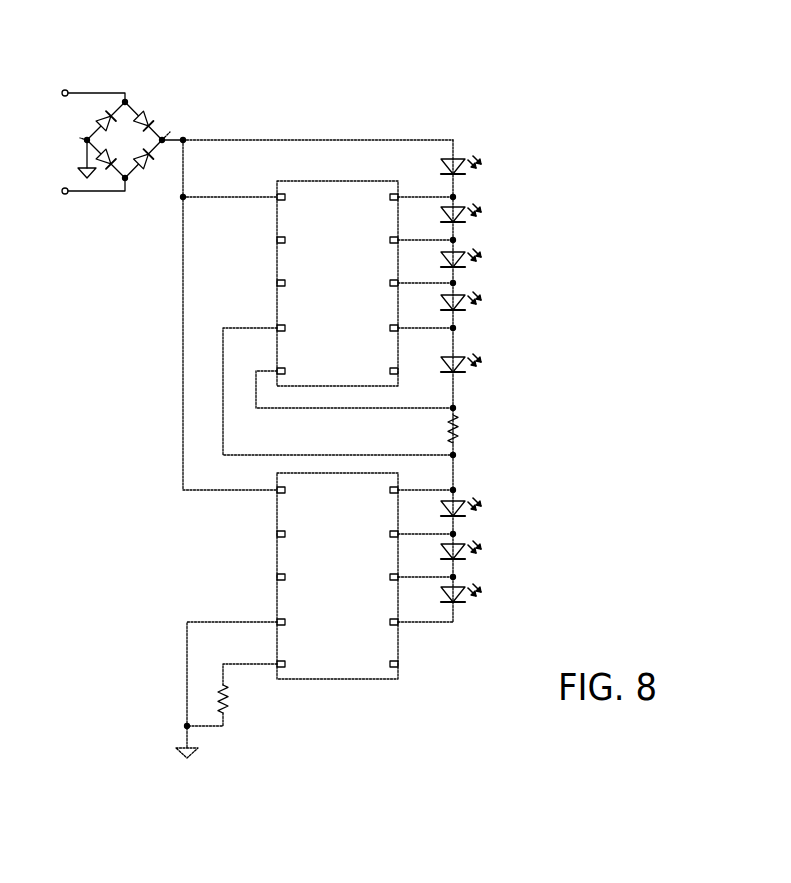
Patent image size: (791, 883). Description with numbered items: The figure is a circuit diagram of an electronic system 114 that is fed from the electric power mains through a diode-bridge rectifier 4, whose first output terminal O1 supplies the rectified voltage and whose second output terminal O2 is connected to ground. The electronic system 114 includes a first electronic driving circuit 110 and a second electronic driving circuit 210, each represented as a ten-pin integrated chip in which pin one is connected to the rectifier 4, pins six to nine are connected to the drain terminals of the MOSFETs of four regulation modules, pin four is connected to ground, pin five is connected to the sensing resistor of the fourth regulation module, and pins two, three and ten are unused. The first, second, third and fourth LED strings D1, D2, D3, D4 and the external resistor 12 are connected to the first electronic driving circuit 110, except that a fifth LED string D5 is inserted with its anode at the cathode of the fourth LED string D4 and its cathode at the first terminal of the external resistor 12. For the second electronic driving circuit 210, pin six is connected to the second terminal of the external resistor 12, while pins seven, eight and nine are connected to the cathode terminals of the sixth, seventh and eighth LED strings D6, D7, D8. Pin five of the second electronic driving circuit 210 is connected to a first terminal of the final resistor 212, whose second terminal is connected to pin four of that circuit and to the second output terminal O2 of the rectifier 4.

The rectifier 4 is at (162, 92).
The electronic system 114 is at (528, 80).
The first electronic driving circuit 110 is at (312, 190).
The second electronic driving circuit 210 is at (348, 671).
The external resistor 12 is at (459, 428).
The final resistor 212 is at (226, 702).
The first output terminal O1 is at (168, 134).
The second output terminal O2 is at (80, 138).
The first LED string D1 is at (462, 162).
The second LED string D2 is at (462, 210).
The third LED string D3 is at (462, 255).
The fourth LED string D4 is at (462, 298).
The fifth LED string D5 is at (462, 360).
The sixth LED string D6 is at (462, 504).
The seventh LED string D7 is at (462, 547).
The eighth LED string D8 is at (462, 590).